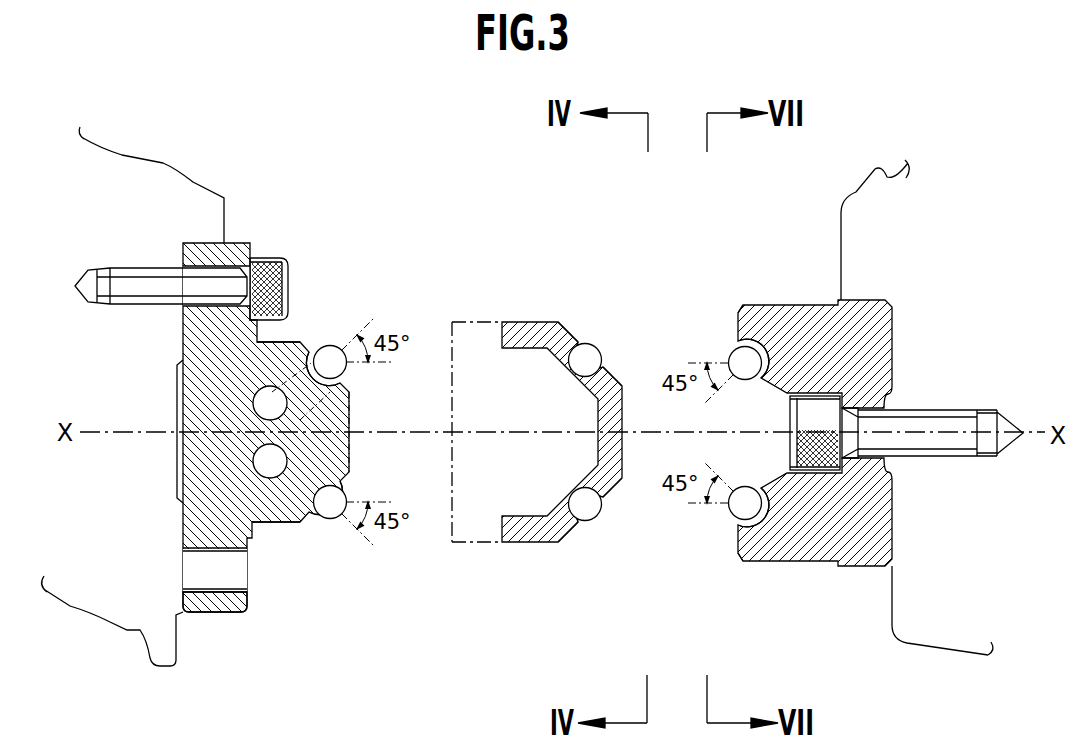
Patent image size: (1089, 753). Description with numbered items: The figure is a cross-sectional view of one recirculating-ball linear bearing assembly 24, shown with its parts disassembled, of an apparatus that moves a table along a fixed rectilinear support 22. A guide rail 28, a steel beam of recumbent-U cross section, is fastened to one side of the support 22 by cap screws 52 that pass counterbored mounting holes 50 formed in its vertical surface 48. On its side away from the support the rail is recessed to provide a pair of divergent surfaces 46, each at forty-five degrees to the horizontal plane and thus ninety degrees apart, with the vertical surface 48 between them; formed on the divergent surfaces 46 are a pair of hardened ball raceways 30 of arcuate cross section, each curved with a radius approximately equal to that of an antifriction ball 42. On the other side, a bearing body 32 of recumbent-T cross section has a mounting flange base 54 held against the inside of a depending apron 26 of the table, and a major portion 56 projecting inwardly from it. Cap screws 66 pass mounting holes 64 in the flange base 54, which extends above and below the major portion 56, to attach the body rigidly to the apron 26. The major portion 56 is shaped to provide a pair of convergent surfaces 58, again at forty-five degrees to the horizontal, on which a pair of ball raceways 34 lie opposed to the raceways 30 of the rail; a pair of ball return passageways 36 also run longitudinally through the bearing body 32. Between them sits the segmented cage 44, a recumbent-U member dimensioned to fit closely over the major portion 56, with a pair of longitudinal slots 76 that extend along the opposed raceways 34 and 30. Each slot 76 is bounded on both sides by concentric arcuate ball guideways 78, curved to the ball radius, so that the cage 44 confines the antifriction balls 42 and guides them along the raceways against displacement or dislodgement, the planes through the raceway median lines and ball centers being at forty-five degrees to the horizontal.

The rectilinear support 22 is at (887, 185).
The recirculating-ball linear bearing assembly 24 is at (358, 257).
The depending apron 26 is at (192, 182).
The guide rail 28 is at (893, 357).
The ball raceway 30 is at (737, 349).
The bearing body 32 is at (183, 344).
The ball raceway 34 is at (323, 352).
The ball return passageway 36 is at (262, 411).
The antifriction ball 42 is at (345, 374).
The segmented cage 44 is at (522, 322).
The divergent surface 46 is at (740, 340).
The vertical surface 48 is at (788, 454).
The counterbored mounting hole 50 is at (873, 452).
The cap screw 52 is at (958, 458).
The mounting flange base 54 is at (213, 603).
The major portion 56 is at (336, 419).
The convergent surface 58 is at (303, 345).
The mounting hole 64 is at (200, 586).
The cap screw 66 is at (143, 283).
The slot 76 is at (574, 377).
The ball guideway 78 is at (569, 368).